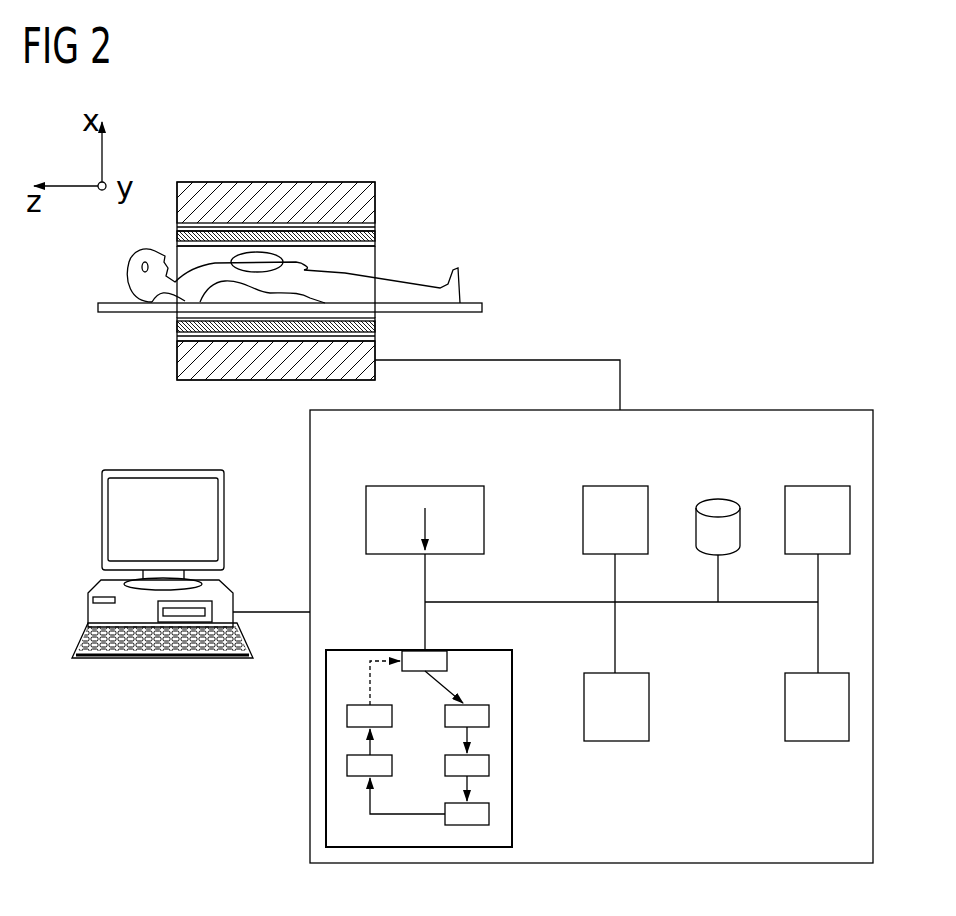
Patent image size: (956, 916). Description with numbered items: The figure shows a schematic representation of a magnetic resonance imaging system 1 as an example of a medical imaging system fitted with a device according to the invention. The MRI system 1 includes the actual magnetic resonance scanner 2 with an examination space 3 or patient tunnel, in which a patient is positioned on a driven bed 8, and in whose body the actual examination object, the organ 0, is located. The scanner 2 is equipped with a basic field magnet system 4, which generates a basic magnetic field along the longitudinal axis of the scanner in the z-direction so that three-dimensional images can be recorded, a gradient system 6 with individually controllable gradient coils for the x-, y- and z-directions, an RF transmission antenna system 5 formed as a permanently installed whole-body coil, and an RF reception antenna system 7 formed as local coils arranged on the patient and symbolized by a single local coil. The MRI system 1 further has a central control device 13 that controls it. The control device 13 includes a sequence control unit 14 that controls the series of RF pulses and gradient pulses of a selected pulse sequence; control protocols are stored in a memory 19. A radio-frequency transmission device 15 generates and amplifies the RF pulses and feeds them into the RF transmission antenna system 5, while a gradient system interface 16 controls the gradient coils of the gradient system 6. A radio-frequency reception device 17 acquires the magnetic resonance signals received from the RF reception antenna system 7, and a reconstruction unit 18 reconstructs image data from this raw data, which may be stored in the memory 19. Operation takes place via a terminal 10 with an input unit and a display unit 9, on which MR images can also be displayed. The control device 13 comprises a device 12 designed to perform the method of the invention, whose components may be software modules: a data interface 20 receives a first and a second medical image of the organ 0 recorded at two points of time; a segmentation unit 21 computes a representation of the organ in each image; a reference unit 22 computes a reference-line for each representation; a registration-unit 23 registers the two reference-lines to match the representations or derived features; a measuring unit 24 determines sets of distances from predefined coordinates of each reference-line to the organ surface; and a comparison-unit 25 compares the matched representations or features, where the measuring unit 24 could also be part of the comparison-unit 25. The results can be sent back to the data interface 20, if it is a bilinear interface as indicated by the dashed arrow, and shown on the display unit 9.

The magnetic resonance imaging system 1 is at (752, 150).
The magnetic resonance scanner 2 is at (325, 191).
The examination space 3 is at (376, 262).
The basic field magnet system 4 is at (185, 362).
The RF transmission antenna system 5 is at (177, 243).
The gradient system 6 is at (375, 226).
The RF reception antenna system 7 is at (257, 262).
The driven bed 8 is at (484, 309).
The organ 0 is at (468, 282).
The display unit 9 is at (163, 470).
The terminal 10 is at (162, 660).
The device 12 is at (326, 815).
The central control device 13 is at (733, 409).
The sequence control unit 14 is at (425, 486).
The radio-frequency transmission device 15 is at (615, 486).
The gradient system interface 16 is at (615, 742).
The radio-frequency reception device 17 is at (818, 486).
The reconstruction unit 18 is at (785, 707).
The memory 19 is at (718, 498).
The data interface 20 is at (447, 661).
The segmentation unit 21 is at (489, 716).
The reference unit 22 is at (489, 766).
The registration-unit 23 is at (489, 815).
The measuring unit 24 is at (347, 766).
The comparison-unit 25 is at (347, 716).